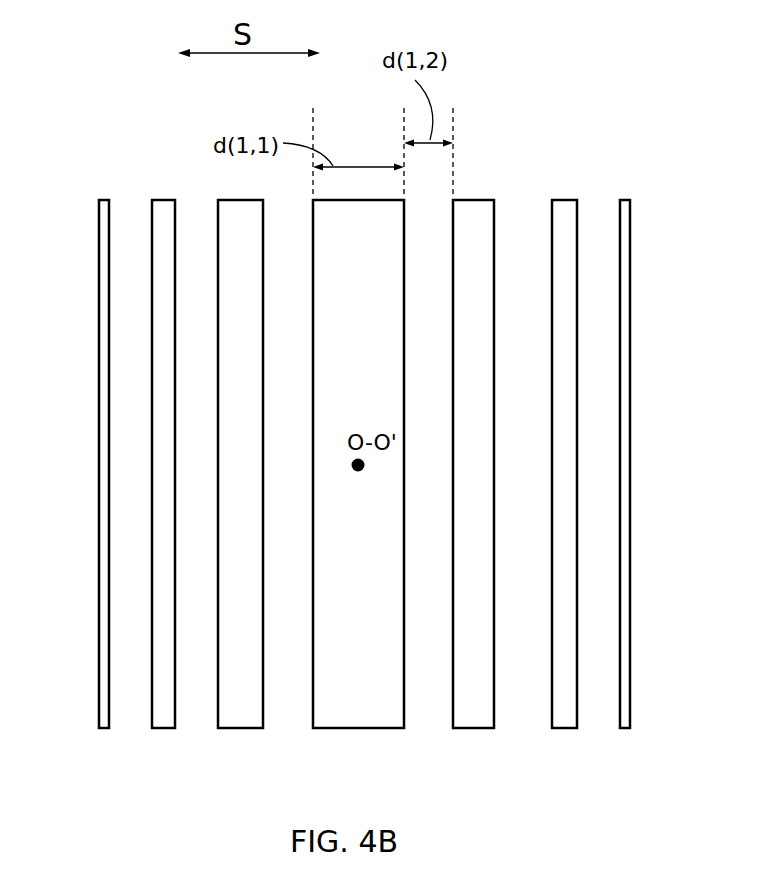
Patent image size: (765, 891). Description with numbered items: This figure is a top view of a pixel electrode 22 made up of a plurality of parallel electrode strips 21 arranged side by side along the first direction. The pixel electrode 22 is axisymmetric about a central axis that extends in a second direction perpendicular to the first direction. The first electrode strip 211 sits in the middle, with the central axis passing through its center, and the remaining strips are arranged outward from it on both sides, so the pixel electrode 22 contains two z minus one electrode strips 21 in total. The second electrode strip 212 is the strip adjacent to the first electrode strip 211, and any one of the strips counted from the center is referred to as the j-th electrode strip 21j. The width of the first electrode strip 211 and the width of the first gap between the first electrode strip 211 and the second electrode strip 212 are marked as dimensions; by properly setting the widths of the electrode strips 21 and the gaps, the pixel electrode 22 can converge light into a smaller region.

The electrode strips 21 is at (565, 113).
The j-th electrode strip 21j is at (562, 215).
The pixel electrode 22 is at (128, 150).
The first electrode strip 211 is at (399, 687).
The second electrode strip 212 is at (239, 697).